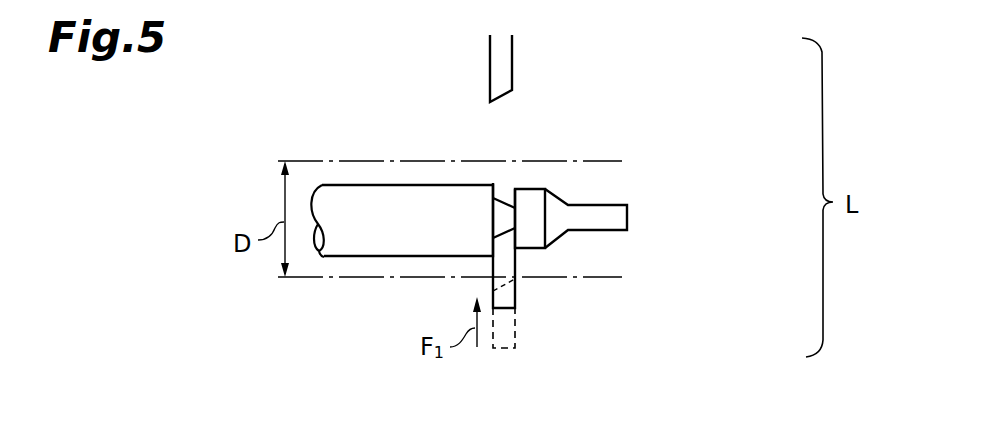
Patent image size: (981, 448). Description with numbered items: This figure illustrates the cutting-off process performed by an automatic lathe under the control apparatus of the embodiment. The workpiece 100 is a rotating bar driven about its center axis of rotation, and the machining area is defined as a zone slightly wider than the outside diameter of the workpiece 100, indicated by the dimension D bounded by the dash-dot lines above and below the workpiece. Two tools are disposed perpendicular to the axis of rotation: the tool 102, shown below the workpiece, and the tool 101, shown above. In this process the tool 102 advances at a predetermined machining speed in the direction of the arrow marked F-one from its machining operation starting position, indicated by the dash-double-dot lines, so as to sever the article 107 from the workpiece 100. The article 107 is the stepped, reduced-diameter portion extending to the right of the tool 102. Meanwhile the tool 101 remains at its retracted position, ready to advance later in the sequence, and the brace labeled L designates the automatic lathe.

The workpiece 100 is at (363, 245).
The tool 101 is at (505, 62).
The tool 102 is at (507, 293).
The article 107 is at (616, 217).